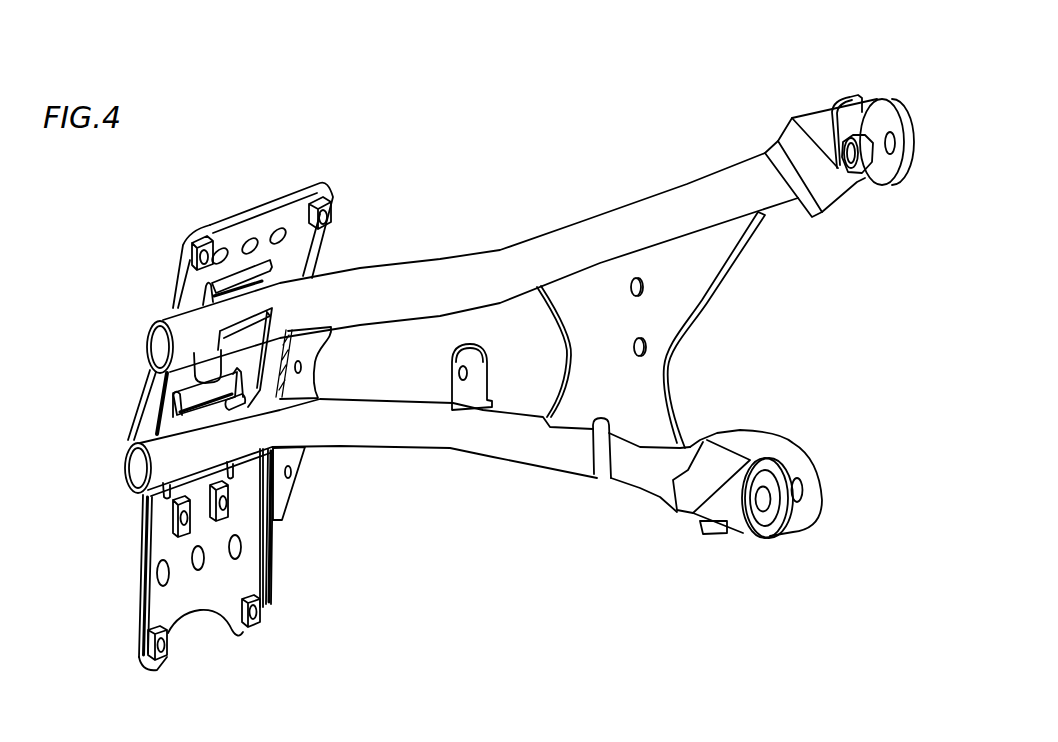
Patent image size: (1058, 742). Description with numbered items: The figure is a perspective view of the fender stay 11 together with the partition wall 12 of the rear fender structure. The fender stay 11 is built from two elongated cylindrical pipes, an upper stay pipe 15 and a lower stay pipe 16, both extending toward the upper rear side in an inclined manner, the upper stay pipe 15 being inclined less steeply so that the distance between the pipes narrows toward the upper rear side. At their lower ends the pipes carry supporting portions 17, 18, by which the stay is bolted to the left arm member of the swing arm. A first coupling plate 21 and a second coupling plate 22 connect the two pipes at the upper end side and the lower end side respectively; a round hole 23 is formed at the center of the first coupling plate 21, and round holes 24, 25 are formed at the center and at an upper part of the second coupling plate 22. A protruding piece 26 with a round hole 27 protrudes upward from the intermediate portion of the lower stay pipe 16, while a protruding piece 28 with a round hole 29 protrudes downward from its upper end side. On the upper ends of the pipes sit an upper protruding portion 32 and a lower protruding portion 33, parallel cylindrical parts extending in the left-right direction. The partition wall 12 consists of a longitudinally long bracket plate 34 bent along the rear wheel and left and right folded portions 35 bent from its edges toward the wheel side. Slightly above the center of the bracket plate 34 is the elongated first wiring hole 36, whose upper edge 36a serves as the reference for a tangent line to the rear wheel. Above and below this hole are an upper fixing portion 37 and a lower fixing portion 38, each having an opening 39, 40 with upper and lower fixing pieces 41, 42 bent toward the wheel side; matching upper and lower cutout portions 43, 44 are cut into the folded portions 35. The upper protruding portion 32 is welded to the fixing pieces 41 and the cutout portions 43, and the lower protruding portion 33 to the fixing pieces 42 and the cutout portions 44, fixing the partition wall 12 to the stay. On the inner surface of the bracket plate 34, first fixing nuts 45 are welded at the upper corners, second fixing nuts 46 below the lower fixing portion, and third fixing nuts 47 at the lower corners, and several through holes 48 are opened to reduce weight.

The fender stay 11 is at (457, 173).
The partition wall 12 is at (248, 209).
The upper stay pipe 15 is at (467, 265).
The lower stay pipe 16 is at (512, 412).
The supporting portion 17 is at (893, 120).
The supporting portion 18 is at (807, 470).
The first coupling plate 21 is at (327, 345).
The second coupling plate 22 is at (713, 282).
The round hole 23 is at (301, 368).
The round hole 24 is at (640, 347).
The round hole 25 is at (642, 287).
The protruding piece 26 is at (467, 343).
The round hole 27 is at (463, 373).
The protruding piece 28 is at (305, 463).
The round hole 29 is at (290, 472).
The upper protruding portion 32 is at (187, 350).
The lower protruding portion 33 is at (167, 467).
The bracket plate 34 is at (202, 610).
The folded portions 35 is at (140, 530).
The first wiring hole 36 is at (193, 380).
The upper edge 36a is at (210, 372).
The upper fixing portion 37 is at (128, 263).
The lower fixing portion 38 is at (93, 403).
The opening 39 is at (200, 300).
The opening 40 is at (172, 425).
The fixing pieces 41 is at (207, 283).
The fixing pieces 42 is at (177, 410).
The upper cutout portion 43 is at (147, 331).
The lower cutout portion 44 is at (137, 453).
The first fixing nuts 45 is at (200, 234).
The second fixing nuts 46 is at (190, 528).
The third fixing nuts 47 is at (165, 655).
The through holes 48 is at (222, 248).